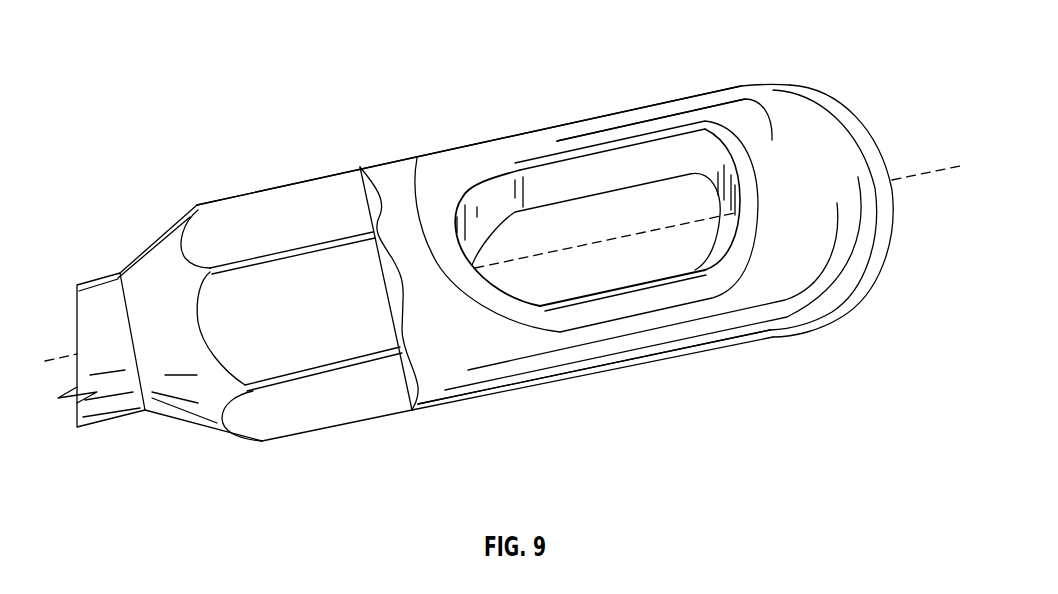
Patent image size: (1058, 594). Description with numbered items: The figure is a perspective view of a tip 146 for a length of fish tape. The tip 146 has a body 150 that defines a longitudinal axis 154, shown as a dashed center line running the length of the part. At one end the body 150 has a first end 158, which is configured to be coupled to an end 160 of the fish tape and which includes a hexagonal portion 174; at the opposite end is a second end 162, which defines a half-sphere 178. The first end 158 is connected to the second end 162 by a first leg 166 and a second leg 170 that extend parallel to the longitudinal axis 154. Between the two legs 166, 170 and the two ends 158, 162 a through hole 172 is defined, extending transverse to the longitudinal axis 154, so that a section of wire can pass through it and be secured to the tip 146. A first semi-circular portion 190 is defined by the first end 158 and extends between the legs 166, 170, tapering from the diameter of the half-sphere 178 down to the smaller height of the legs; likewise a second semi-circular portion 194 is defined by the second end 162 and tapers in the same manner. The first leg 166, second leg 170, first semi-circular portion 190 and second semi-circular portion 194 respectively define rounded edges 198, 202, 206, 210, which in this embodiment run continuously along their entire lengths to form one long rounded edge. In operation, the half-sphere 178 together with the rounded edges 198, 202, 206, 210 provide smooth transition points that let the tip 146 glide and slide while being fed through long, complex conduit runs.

The tip 146 is at (161, 131).
The body 150 is at (441, 383).
The longitudinal axis 154 is at (915, 178).
The first end 158 is at (205, 410).
The end of the fish tape 160 is at (102, 424).
The second end 162 is at (847, 287).
The first leg 166 is at (663, 103).
The second leg 170 is at (672, 335).
The through hole 172 is at (677, 253).
The hexagonal portion 174 is at (330, 402).
The half-sphere 178 is at (853, 143).
The first semi-circular portion 190 is at (442, 240).
The second semi-circular portion 194 is at (737, 128).
The rounded edge 198 is at (594, 146).
The rounded edge 202 is at (617, 297).
The rounded edge 206 is at (455, 195).
The rounded edge 210 is at (753, 147).